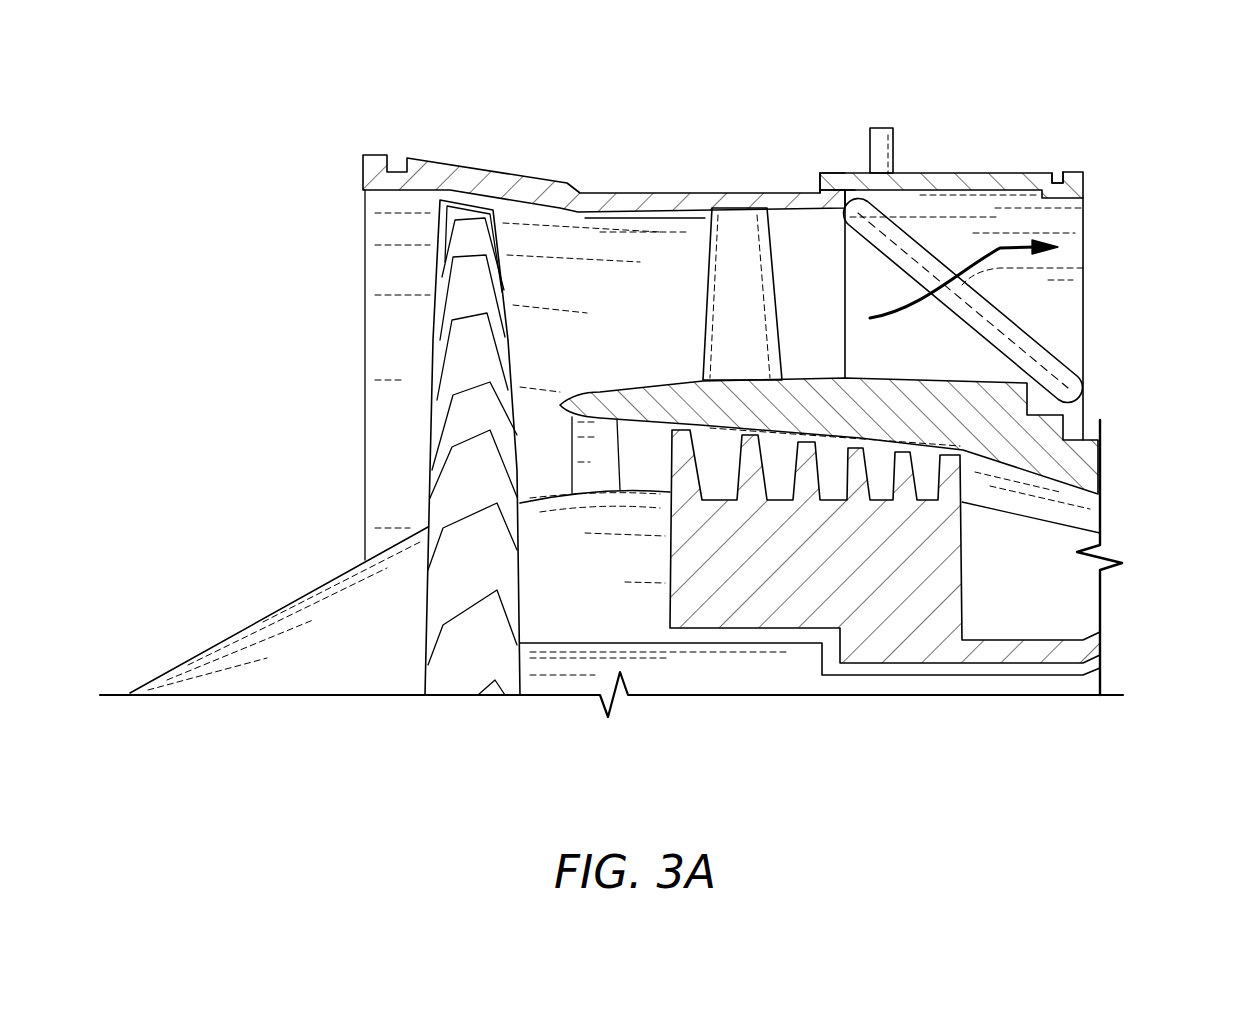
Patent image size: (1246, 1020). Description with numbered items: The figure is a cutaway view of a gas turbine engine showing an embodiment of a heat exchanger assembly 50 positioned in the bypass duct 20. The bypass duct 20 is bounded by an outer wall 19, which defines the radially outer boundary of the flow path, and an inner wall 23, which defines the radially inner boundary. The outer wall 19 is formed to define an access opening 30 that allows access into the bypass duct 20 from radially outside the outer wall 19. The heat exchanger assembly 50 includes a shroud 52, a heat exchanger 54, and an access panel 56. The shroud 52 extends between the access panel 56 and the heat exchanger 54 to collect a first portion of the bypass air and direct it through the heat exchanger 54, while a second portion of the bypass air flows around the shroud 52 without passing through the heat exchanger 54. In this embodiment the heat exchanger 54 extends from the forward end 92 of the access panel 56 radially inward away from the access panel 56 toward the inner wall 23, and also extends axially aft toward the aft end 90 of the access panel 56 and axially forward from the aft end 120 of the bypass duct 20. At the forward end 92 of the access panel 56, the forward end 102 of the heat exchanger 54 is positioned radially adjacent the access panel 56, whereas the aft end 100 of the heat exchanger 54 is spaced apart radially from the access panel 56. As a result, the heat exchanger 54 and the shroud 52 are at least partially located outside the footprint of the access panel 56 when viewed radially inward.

The outer wall 19 is at (687, 202).
The bypass duct 20 is at (620, 288).
The inner wall 23 is at (630, 390).
The access opening 30 is at (950, 212).
The heat exchanger assembly 50 is at (975, 173).
The shroud 52 is at (843, 302).
The heat exchanger 54 is at (1083, 268).
The access panel 56 is at (850, 185).
The aft end of the access panel 90 is at (1030, 172).
The forward end of the access panel 92 is at (820, 173).
The aft end of the heat exchanger 100 is at (1088, 408).
The forward end of the heat exchanger 102 is at (845, 192).
The aft end of the bypass duct 120 is at (1100, 218).